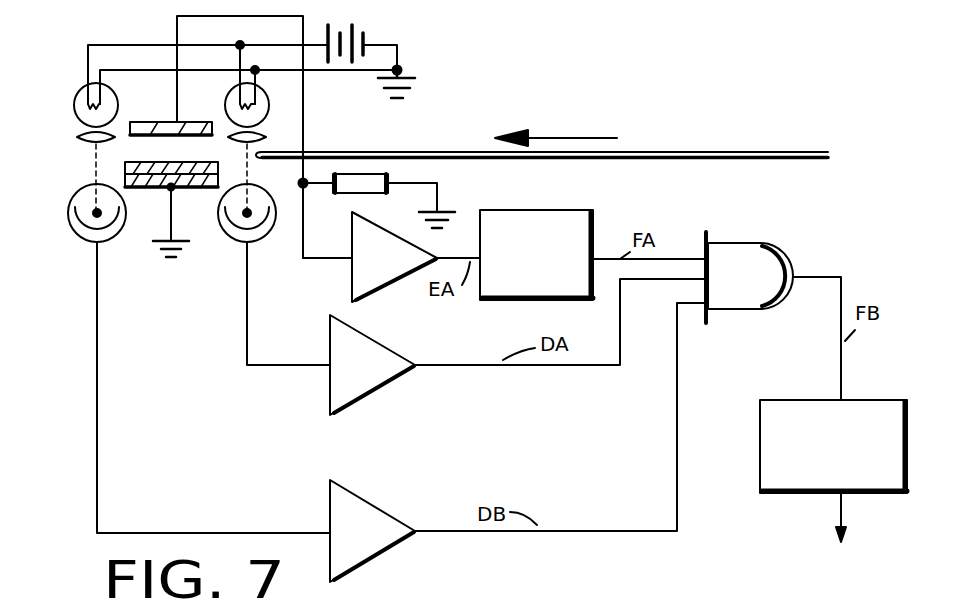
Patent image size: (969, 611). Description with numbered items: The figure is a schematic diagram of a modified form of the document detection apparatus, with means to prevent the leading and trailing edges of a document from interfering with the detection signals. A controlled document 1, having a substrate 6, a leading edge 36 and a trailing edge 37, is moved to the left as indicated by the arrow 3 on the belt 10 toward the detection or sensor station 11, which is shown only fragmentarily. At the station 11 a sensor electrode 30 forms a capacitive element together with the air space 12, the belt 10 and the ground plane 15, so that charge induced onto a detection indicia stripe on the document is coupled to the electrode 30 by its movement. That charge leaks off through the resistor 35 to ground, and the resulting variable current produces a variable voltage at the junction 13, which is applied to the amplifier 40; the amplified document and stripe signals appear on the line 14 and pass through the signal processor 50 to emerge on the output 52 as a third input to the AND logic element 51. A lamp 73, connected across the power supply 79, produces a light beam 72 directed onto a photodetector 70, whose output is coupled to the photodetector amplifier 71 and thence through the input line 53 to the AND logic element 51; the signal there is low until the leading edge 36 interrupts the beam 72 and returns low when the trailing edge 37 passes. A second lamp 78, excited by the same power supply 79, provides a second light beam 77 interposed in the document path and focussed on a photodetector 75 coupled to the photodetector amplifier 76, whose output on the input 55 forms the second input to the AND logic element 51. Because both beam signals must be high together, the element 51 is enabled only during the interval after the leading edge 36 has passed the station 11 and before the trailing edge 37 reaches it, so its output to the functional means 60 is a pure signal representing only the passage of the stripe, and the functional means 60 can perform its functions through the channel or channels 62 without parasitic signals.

The controlled document 1 is at (774, 141).
The arrow 3 is at (568, 138).
The substrate 6 is at (406, 152).
The belt 10 is at (185, 163).
The detection or sensor station 11 is at (201, 201).
The air space 12 is at (137, 147).
The junction 13 is at (300, 192).
The line 14 is at (446, 230).
The ground plane 15 is at (167, 195).
The sensor electrode 30 is at (177, 121).
The resistor 35 is at (357, 186).
The leading edge 36 is at (258, 148).
The trailing edge 37 is at (828, 151).
The amplifier 40 is at (377, 240).
The signal processor 50 is at (578, 227).
The AND logic element 51 is at (771, 260).
The output 52 is at (703, 259).
The input line 53 is at (600, 365).
The input 55 is at (605, 532).
The functional means 60 is at (879, 404).
The channel 62 is at (845, 520).
The photodetector 70 is at (270, 228).
The photodetector amplifier 71 is at (381, 360).
The light beam 72 is at (250, 165).
The lamp 73 is at (258, 104).
The photodetector 75 is at (78, 222).
The photodetector amplifier 76 is at (381, 523).
The light beam 77 is at (93, 168).
The lamp 78 is at (78, 108).
The power supply 79 is at (360, 31).